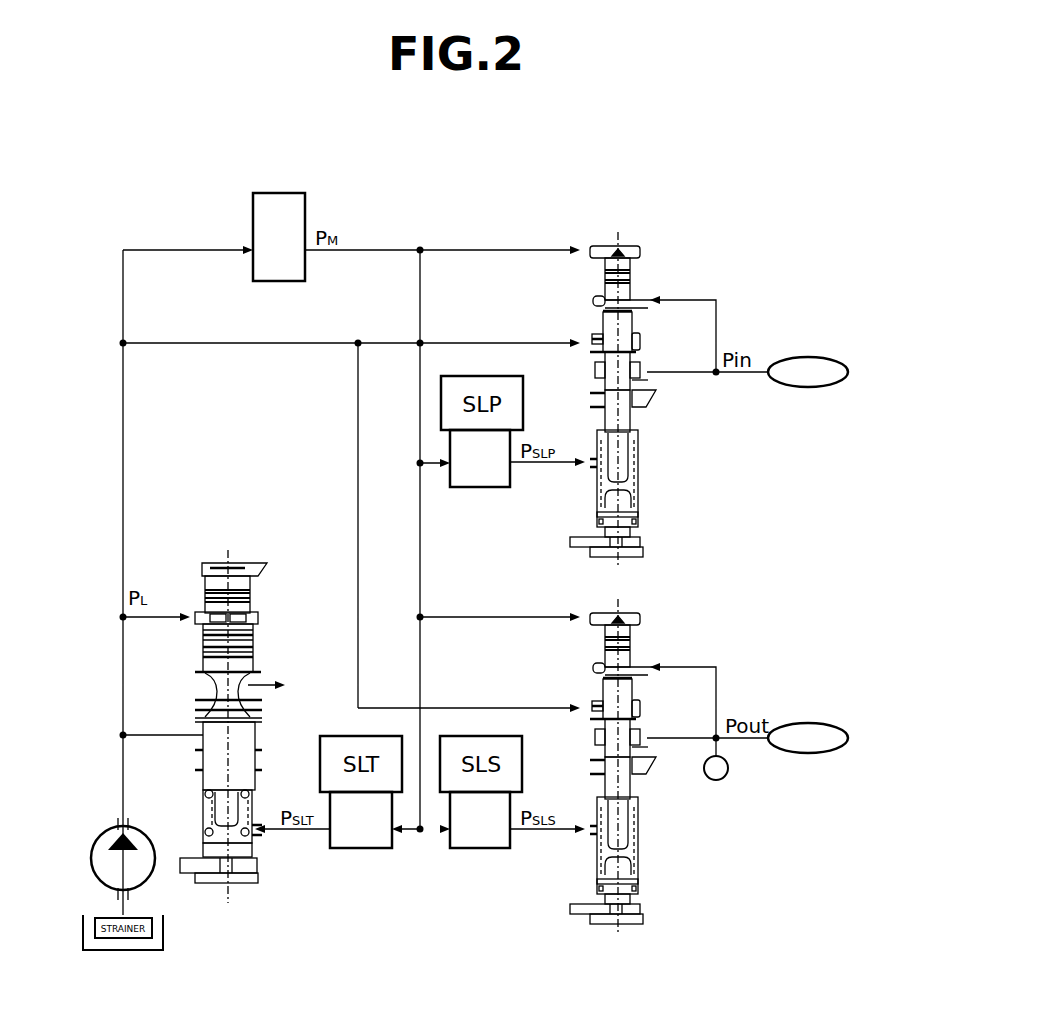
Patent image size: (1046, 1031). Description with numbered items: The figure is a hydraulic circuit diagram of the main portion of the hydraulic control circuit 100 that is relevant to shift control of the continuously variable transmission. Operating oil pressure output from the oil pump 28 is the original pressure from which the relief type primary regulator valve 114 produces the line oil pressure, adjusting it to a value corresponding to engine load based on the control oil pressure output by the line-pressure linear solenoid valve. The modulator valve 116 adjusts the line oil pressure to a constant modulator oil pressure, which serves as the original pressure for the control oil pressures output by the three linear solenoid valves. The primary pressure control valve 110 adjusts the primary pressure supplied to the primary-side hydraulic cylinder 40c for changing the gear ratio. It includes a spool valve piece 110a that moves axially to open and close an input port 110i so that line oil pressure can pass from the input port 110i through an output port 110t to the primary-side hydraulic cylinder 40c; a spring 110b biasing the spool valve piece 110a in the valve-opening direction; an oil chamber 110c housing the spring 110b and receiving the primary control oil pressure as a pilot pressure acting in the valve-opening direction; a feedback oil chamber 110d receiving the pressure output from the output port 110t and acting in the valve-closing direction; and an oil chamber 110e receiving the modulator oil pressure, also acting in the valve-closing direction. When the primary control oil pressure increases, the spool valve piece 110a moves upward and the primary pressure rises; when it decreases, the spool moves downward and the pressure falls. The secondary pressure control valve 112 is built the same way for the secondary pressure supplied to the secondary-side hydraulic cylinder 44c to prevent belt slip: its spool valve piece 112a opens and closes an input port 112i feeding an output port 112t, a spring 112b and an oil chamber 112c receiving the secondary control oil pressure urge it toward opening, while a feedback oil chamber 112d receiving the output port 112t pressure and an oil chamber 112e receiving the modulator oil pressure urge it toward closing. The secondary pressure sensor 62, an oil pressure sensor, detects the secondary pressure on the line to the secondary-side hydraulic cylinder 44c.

The hydraulic control circuit 100 is at (630, 162).
The primary pressure control valve 110 is at (642, 224).
The spool valve piece 110a is at (628, 418).
The spring 110b is at (638, 508).
The oil chamber 110c is at (623, 489).
The feedback oil chamber 110d is at (598, 303).
The oil chamber 110e is at (640, 252).
The input port 110i is at (597, 338).
The output port 110t is at (638, 366).
The secondary pressure control valve 112 is at (619, 747).
The spool valve piece 112a is at (657, 780).
The spring 112b is at (654, 875).
The oil chamber 112c is at (649, 840).
The feedback oil chamber 112d is at (588, 665).
The oil chamber 112e is at (650, 638).
The input port 112i is at (566, 694).
The output port 112t is at (653, 735).
The primary regulator valve 114 is at (248, 896).
The modulator valve 116 is at (262, 200).
The oil pump 28 is at (138, 872).
The primary-side hydraulic cylinder 40c is at (786, 358).
The secondary-side hydraulic cylinder 44c is at (786, 724).
The secondary pressure sensor 62 is at (716, 772).